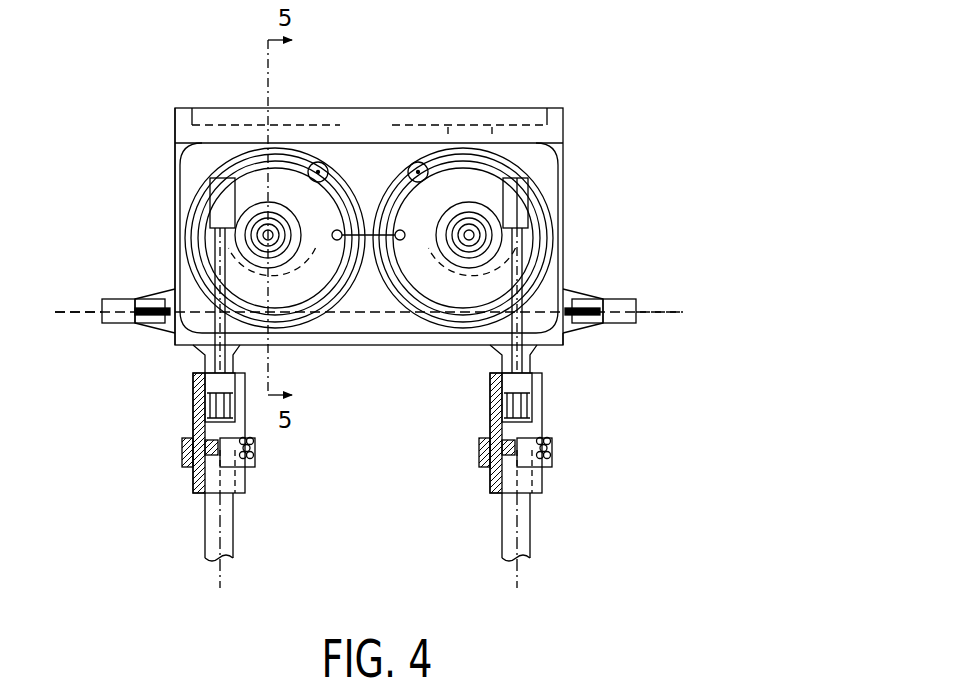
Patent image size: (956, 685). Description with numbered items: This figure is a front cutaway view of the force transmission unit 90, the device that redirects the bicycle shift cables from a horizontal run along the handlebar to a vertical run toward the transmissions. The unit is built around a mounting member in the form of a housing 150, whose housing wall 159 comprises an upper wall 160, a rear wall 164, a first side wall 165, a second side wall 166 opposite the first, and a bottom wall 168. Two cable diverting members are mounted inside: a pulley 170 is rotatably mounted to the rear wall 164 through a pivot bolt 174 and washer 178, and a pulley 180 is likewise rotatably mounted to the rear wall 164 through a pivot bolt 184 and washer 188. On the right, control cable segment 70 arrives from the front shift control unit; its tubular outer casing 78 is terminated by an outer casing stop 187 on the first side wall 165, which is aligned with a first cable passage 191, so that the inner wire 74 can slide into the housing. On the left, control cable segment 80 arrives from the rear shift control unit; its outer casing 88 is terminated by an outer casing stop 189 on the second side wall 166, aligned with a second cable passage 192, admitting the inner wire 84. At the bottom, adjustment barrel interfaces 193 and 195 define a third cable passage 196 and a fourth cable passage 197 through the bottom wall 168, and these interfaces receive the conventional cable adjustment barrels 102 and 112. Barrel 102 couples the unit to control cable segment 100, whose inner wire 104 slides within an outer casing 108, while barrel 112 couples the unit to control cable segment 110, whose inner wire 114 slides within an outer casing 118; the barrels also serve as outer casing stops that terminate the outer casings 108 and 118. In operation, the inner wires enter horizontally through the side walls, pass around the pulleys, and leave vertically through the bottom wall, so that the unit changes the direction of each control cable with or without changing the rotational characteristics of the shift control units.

The housing 150 is at (188, 86).
The force transmission unit 90 is at (569, 92).
The housing wall 159 is at (162, 122).
The upper wall 160 is at (563, 122).
The rear wall 164 is at (556, 172).
The pulley 170 is at (548, 205).
The first side wall 165 is at (563, 237).
The second side wall 166 is at (175, 180).
The bottom wall 168 is at (405, 338).
The pulley 180 is at (212, 171).
The pivot bolt 184 is at (268, 233).
The washer 188 is at (285, 206).
The washer 178 is at (450, 208).
The pivot bolt 174 is at (470, 233).
The second cable passage 192 is at (174, 298).
The adjustment barrel interface 193 is at (497, 368).
The third cable passage 196 is at (497, 348).
The tubular outer casing 88 is at (118, 325).
The outer casing stop 189 is at (156, 333).
The control cable segment 80 is at (110, 289).
The inner wire 84 is at (78, 316).
The tubular outer casing 78 is at (617, 327).
The outer casing stop 187 is at (587, 333).
The control cable segment 70 is at (628, 289).
The inner wire 74 is at (672, 315).
The first cable passage 191 is at (562, 350).
The adjustment barrel interface 195 is at (200, 362).
The fourth cable passage 197 is at (200, 362).
The cable adjustment barrel 112 is at (182, 452).
The outer casing 118 is at (205, 525).
The inner wire 114 is at (220, 572).
The control cable segment 110 is at (254, 524).
The cable adjustment barrel 102 is at (552, 455).
The outer casing 108 is at (533, 528).
The inner wire 104 is at (518, 573).
The control cable segment 100 is at (488, 527).